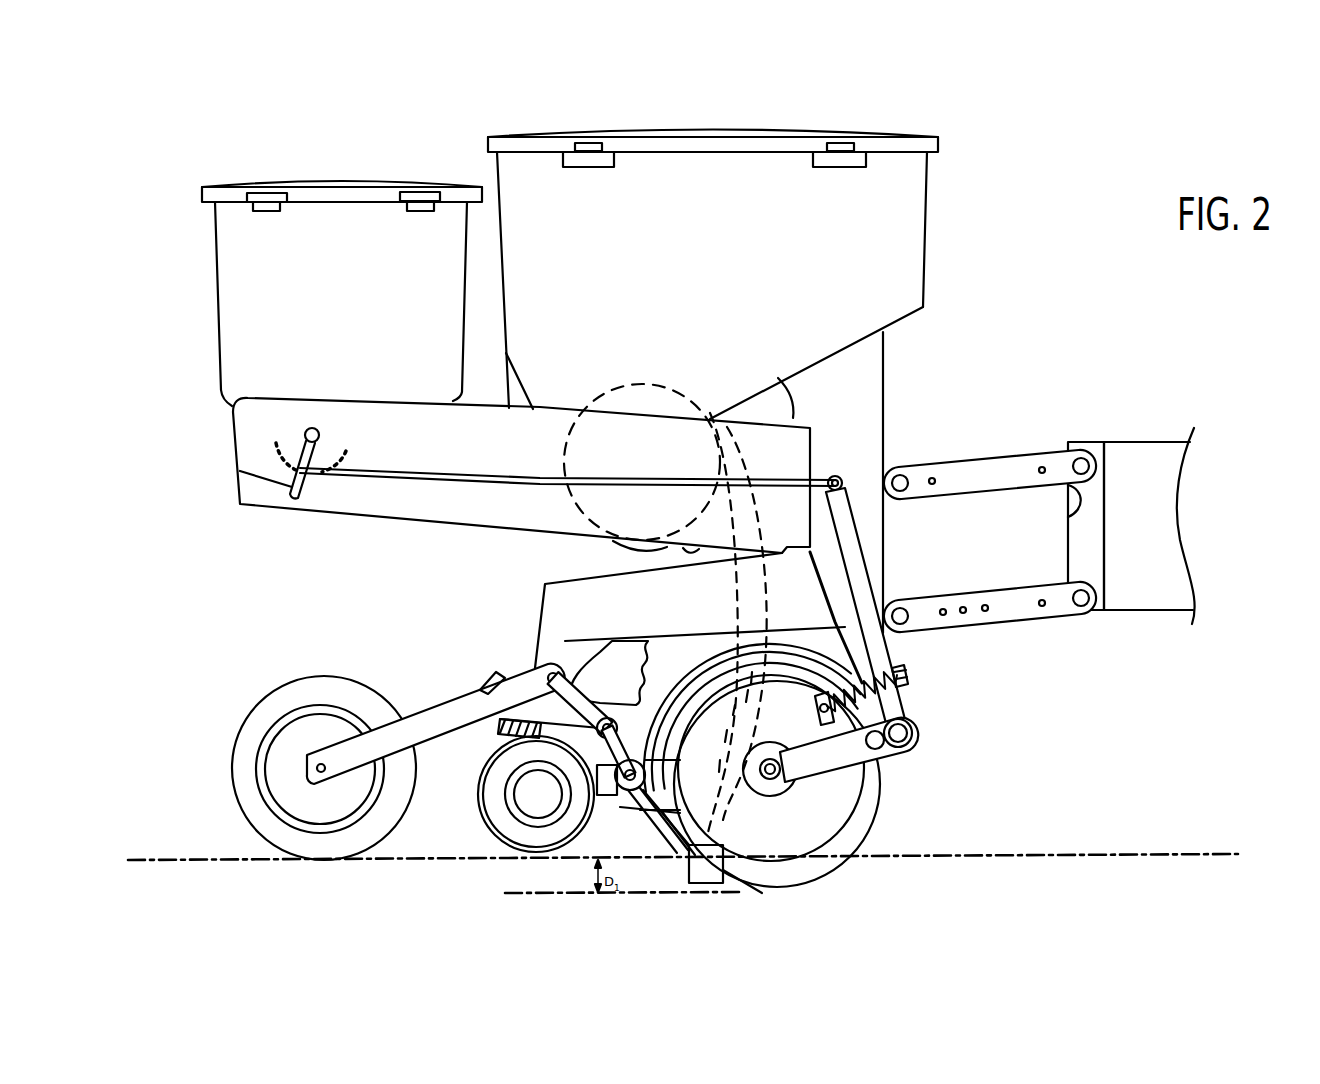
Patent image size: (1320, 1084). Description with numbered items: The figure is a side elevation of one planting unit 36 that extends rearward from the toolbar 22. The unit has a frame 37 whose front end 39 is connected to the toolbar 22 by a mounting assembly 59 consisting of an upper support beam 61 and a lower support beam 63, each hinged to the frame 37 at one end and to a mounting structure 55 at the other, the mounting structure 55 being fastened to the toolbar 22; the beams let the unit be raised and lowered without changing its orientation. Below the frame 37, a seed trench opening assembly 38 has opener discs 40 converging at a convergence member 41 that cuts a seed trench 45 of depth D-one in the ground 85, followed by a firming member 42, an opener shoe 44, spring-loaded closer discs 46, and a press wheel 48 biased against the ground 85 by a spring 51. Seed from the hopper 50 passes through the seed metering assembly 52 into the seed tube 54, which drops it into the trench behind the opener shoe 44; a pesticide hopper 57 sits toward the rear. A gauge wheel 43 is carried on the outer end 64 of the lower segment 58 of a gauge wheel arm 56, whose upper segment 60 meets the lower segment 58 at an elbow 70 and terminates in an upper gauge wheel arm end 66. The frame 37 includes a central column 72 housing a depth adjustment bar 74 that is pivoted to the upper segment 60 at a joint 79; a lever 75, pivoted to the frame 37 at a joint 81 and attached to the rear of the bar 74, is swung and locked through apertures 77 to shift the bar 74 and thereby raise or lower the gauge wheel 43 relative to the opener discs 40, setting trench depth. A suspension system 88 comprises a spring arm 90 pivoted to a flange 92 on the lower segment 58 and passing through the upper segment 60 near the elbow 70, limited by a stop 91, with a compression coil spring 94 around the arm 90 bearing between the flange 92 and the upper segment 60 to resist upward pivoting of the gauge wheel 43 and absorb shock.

The toolbar 22 is at (1130, 438).
The planting unit 36 is at (1012, 76).
The frame 37 is at (392, 527).
The seed trench opening assembly 38 is at (902, 810).
The front end 39 is at (866, 457).
The seed trench opener discs 40 is at (678, 814).
The convergence member 41 is at (836, 878).
The seed trench firming member 42 is at (752, 870).
The gauge wheels 43 is at (873, 787).
The opener shoe 44 is at (705, 880).
The seed trench 45 is at (655, 893).
The seed trench closer discs 46 is at (488, 837).
The press wheel 48 is at (378, 848).
The hopper 50 is at (684, 249).
The spring 51 is at (608, 673).
The seed metering assembly 52 is at (694, 352).
The seed tube 54 is at (742, 598).
The mounting structure 55 is at (1097, 541).
The gauge wheel arm 56 is at (818, 782).
The pesticide hopper 57 is at (347, 301).
The lower segment 58 is at (818, 738).
The mounting assembly 59 is at (1080, 400).
The upper segment 60 is at (868, 580).
The upper support beams 61 is at (975, 458).
The lower support beams 63 is at (993, 624).
The outer end 64 is at (768, 797).
The upper gauge wheel arm end 66 is at (858, 494).
The elbow 70 is at (895, 722).
The column 72 is at (483, 532).
The depth adjustment bar 74 is at (487, 487).
The lever 75 is at (240, 471).
The apertures 77 is at (272, 437).
The joints 79 is at (838, 478).
The joint 81 is at (322, 432).
The ground 85 is at (1050, 860).
The suspension system 88 is at (836, 646).
The spring arms 90 is at (898, 676).
The stop 91 is at (905, 688).
The flange 92 is at (820, 702).
The compression coil spring 94 is at (877, 660).